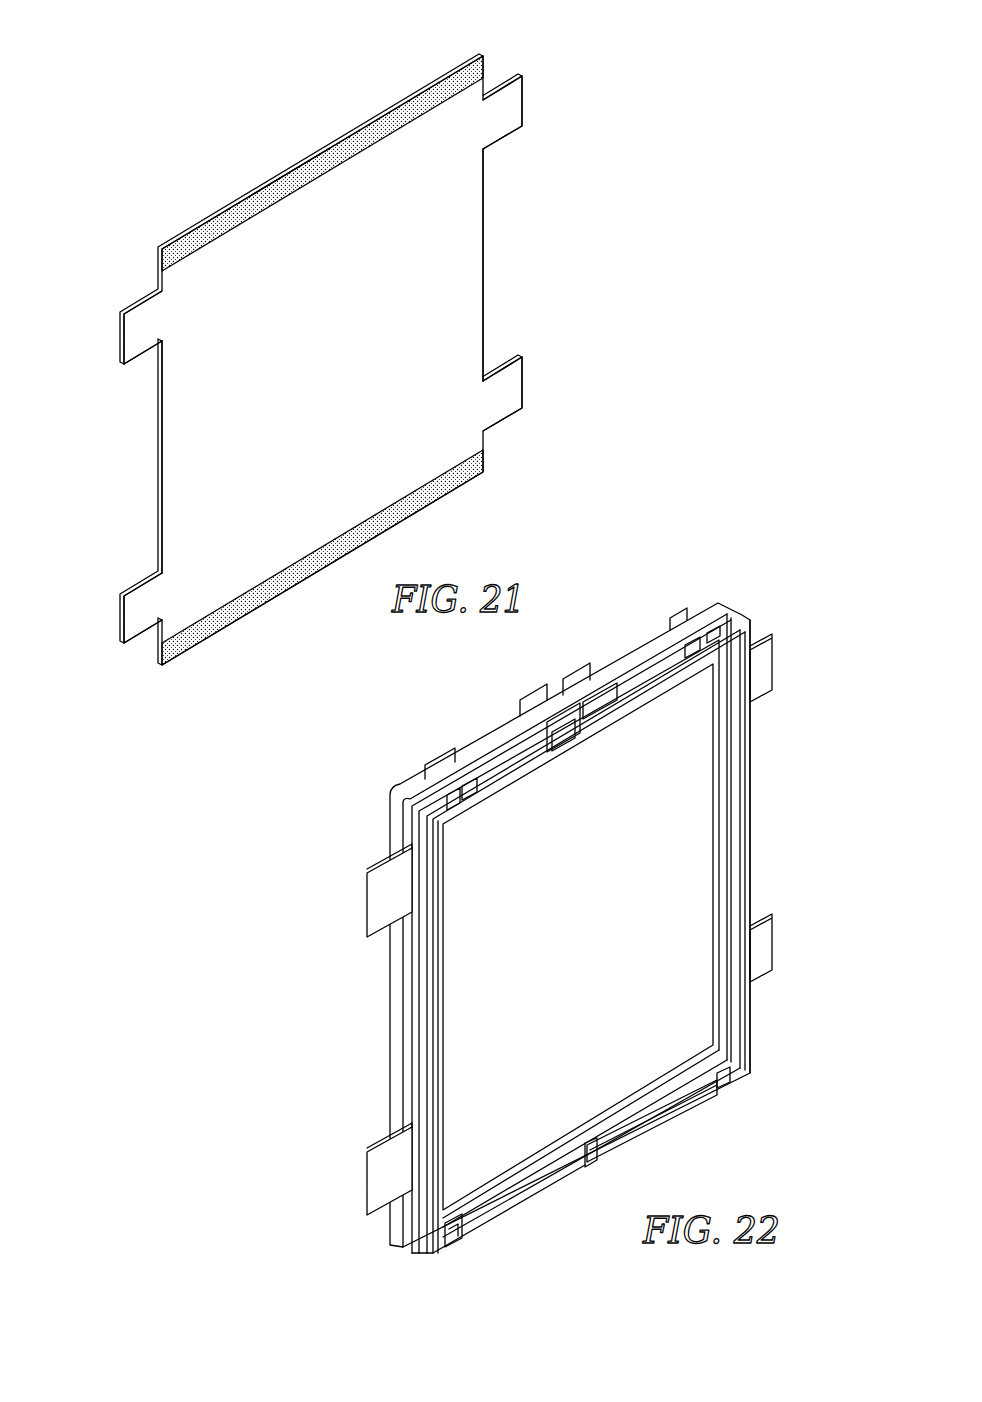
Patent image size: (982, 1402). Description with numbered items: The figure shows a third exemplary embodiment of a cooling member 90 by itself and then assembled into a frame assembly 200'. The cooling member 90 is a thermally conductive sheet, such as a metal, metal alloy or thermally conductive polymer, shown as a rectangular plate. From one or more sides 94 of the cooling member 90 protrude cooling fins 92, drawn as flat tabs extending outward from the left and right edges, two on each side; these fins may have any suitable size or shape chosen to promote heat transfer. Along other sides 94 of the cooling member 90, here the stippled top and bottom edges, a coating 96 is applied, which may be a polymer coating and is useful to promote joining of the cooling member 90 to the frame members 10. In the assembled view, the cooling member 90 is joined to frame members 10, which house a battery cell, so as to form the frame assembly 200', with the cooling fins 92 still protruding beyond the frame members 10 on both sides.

In FIG. 22, the frame member 10 is at (693, 607).
In FIG. 22, the frame assembly 200' is at (607, 887).
In FIG. 21, the cooling member 90 is at (491, 78).
In FIG. 22, the cooling member 90 is at (716, 786).
In FIG. 21, the cooling fins 92 is at (515, 378).
In FIG. 22, the cooling fins 92 is at (762, 671).
In FIG. 21, the sides 94 is at (325, 147).
In FIG. 21, the coating 96 is at (408, 98).